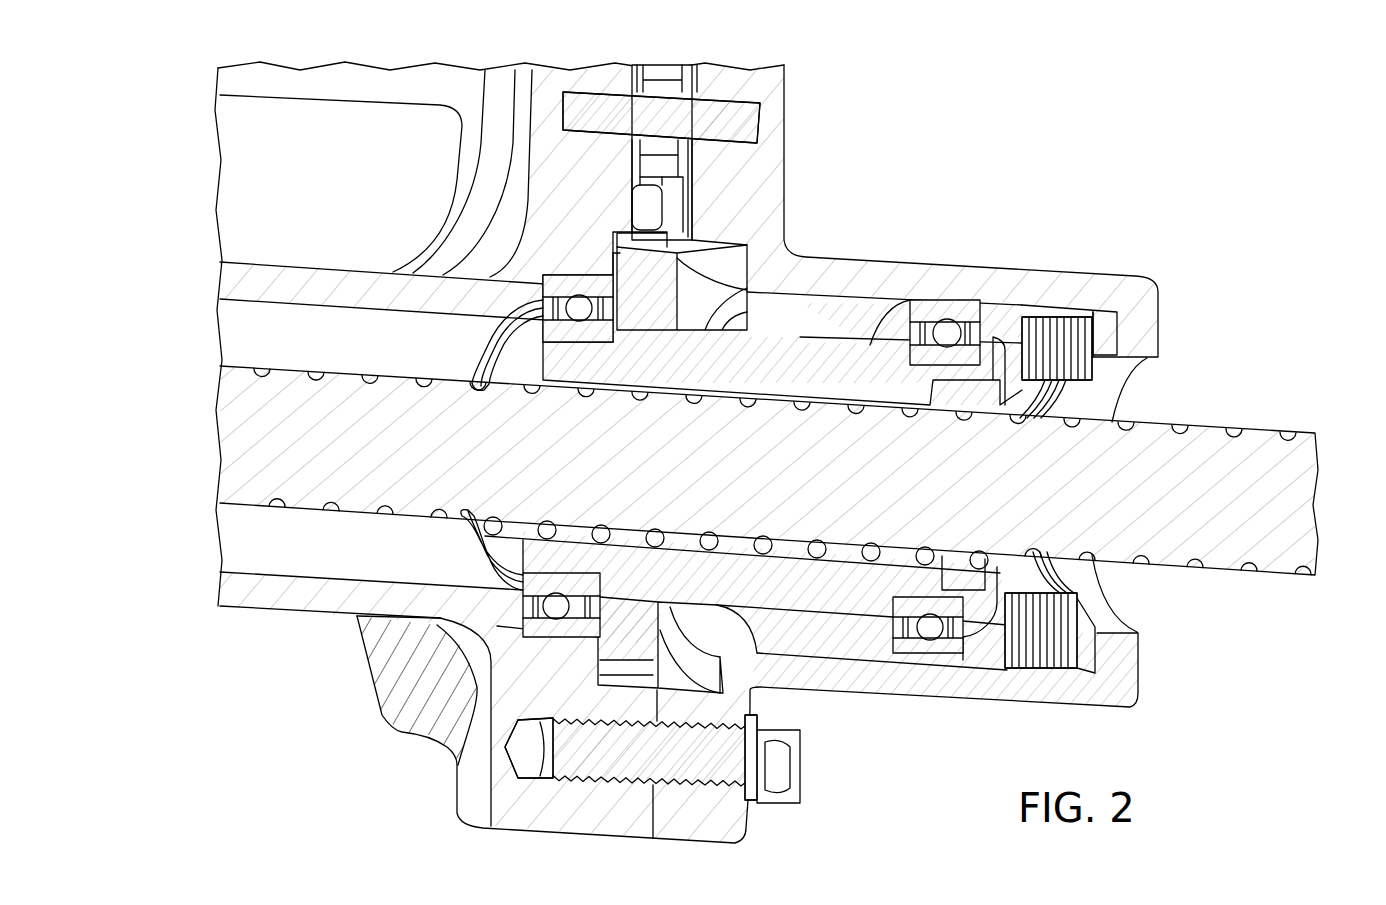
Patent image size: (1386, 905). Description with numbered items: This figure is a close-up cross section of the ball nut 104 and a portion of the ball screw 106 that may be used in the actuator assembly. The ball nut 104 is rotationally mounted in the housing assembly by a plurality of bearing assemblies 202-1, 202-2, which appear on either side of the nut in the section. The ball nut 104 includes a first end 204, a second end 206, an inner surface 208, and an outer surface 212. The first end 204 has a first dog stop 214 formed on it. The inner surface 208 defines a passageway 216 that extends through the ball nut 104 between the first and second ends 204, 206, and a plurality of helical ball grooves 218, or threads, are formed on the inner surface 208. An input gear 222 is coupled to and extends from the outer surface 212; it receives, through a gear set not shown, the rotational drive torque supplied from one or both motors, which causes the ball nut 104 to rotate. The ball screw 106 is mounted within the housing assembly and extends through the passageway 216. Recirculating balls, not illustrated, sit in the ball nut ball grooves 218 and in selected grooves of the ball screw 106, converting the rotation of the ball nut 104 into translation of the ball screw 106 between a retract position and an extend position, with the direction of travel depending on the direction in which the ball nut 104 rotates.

The ball nut 104 is at (790, 127).
The ball screw 106 is at (1280, 428).
The bearing assembly 202-1 is at (580, 288).
The bearing assembly 202-2 is at (947, 300).
The first end 204 is at (522, 362).
The second end 206 is at (1000, 372).
The inner surface 208 is at (761, 392).
The outer surface 212 is at (775, 287).
The first dog stop 214 is at (508, 550).
The passageway 216 is at (1090, 405).
The helical ball grooves 218 is at (737, 548).
The input gear 222 is at (668, 278).